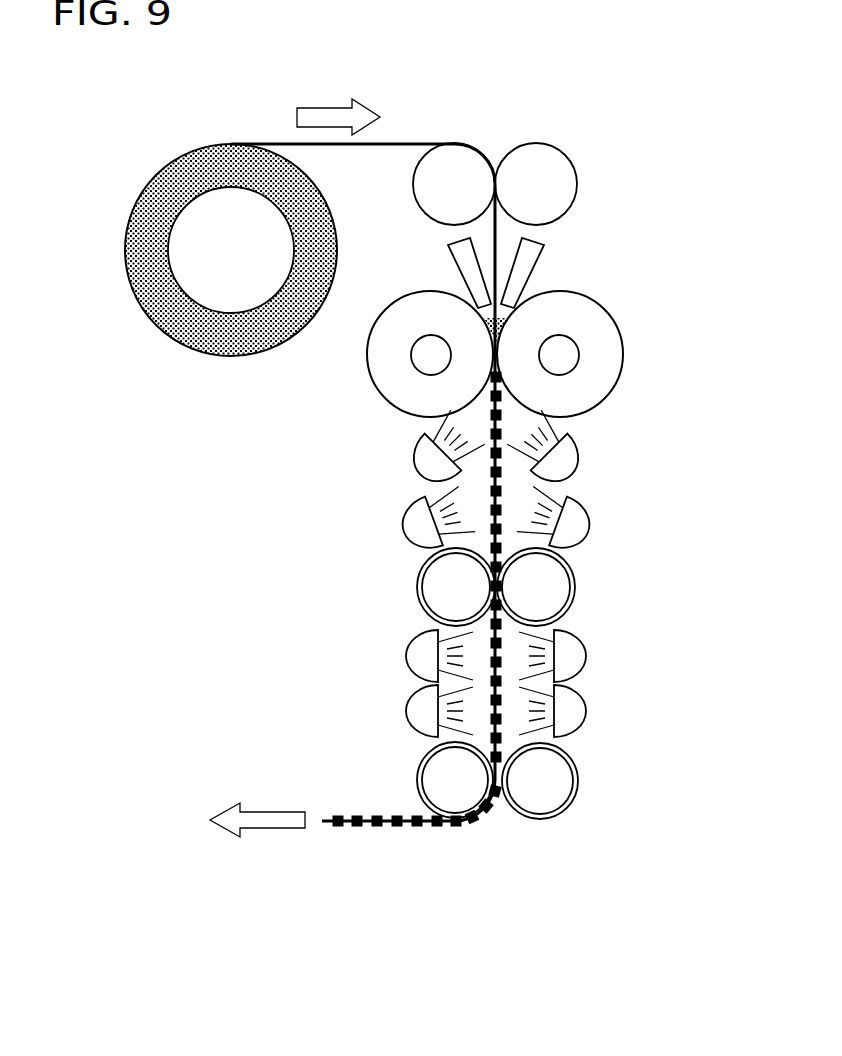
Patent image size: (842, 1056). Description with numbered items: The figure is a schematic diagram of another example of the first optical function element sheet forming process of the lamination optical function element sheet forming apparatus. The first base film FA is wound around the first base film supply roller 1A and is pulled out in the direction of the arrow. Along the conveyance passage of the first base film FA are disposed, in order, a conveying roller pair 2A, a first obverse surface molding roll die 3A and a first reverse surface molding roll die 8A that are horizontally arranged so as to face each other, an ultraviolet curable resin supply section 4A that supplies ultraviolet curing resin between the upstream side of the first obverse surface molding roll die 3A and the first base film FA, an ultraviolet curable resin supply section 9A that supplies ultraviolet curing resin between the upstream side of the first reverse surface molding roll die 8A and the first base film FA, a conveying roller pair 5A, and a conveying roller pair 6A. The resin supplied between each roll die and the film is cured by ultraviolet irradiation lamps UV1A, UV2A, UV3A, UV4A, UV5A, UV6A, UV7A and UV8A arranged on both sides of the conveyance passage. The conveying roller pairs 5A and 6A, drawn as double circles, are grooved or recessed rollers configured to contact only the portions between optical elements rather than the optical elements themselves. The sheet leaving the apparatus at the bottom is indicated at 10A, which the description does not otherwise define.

The first base film supply roller 1A is at (197, 233).
The first base film FA is at (412, 143).
The conveying roller pair 2A is at (507, 129).
The first obverse surface molding roll die 3A is at (367, 364).
The ultraviolet curable resin supply section 4A is at (452, 260).
The conveying roller pair 5A is at (600, 590).
The conveying roller pair 6A is at (542, 835).
The first reverse surface molding roll die 8A is at (605, 372).
The ultraviolet curable resin supply section 9A is at (538, 254).
The coated lens sheet / product 10A is at (338, 856).
The ultraviolet irradiation lamp UV1A is at (423, 447).
The ultraviolet irradiation lamp UV2A is at (415, 515).
The ultraviolet irradiation lamp UV3A is at (565, 440).
The ultraviolet irradiation lamp UV4A is at (580, 518).
The ultraviolet irradiation lamp UV5A is at (583, 655).
The ultraviolet irradiation lamp UV6A is at (585, 720).
The ultraviolet irradiation lamp UV7A is at (403, 653).
The ultraviolet irradiation lamp UV8A is at (403, 712).